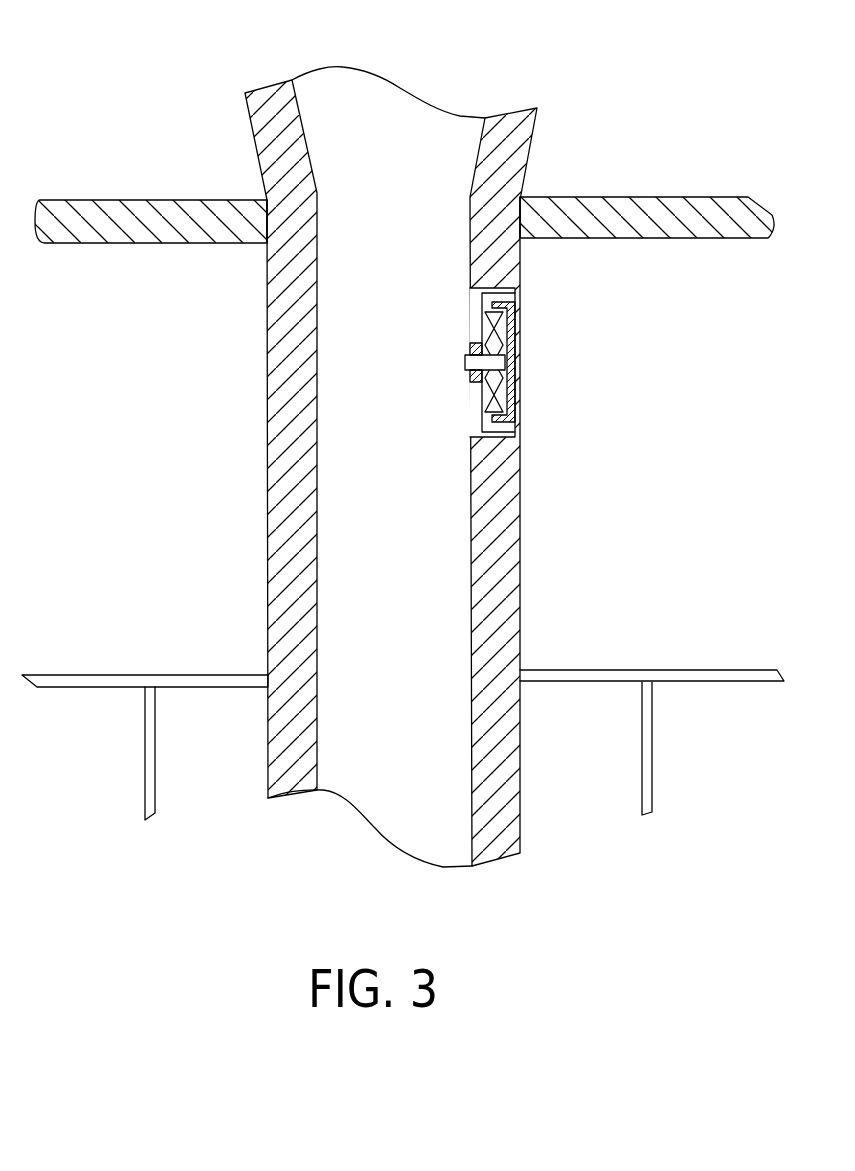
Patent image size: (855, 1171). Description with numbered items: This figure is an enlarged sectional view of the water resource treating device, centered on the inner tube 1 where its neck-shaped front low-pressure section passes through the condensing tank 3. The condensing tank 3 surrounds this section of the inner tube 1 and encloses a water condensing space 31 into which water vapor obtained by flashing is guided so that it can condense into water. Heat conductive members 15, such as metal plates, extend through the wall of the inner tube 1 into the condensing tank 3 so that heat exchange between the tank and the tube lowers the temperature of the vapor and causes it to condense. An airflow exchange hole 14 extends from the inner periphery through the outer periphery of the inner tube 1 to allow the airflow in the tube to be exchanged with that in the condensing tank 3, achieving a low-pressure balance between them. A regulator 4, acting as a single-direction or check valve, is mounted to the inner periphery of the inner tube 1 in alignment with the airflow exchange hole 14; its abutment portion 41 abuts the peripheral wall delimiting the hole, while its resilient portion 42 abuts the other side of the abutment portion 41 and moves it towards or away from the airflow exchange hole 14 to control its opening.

The inner tube 1 is at (542, 137).
The condensing tank 3 is at (672, 205).
The water condensing space 31 is at (175, 395).
The airflow exchange hole 14 is at (516, 328).
The regulator 4 is at (556, 373).
The abutment portion 41 is at (510, 387).
The resilient portion 42 is at (493, 400).
The heat conductive members 15 is at (638, 675).